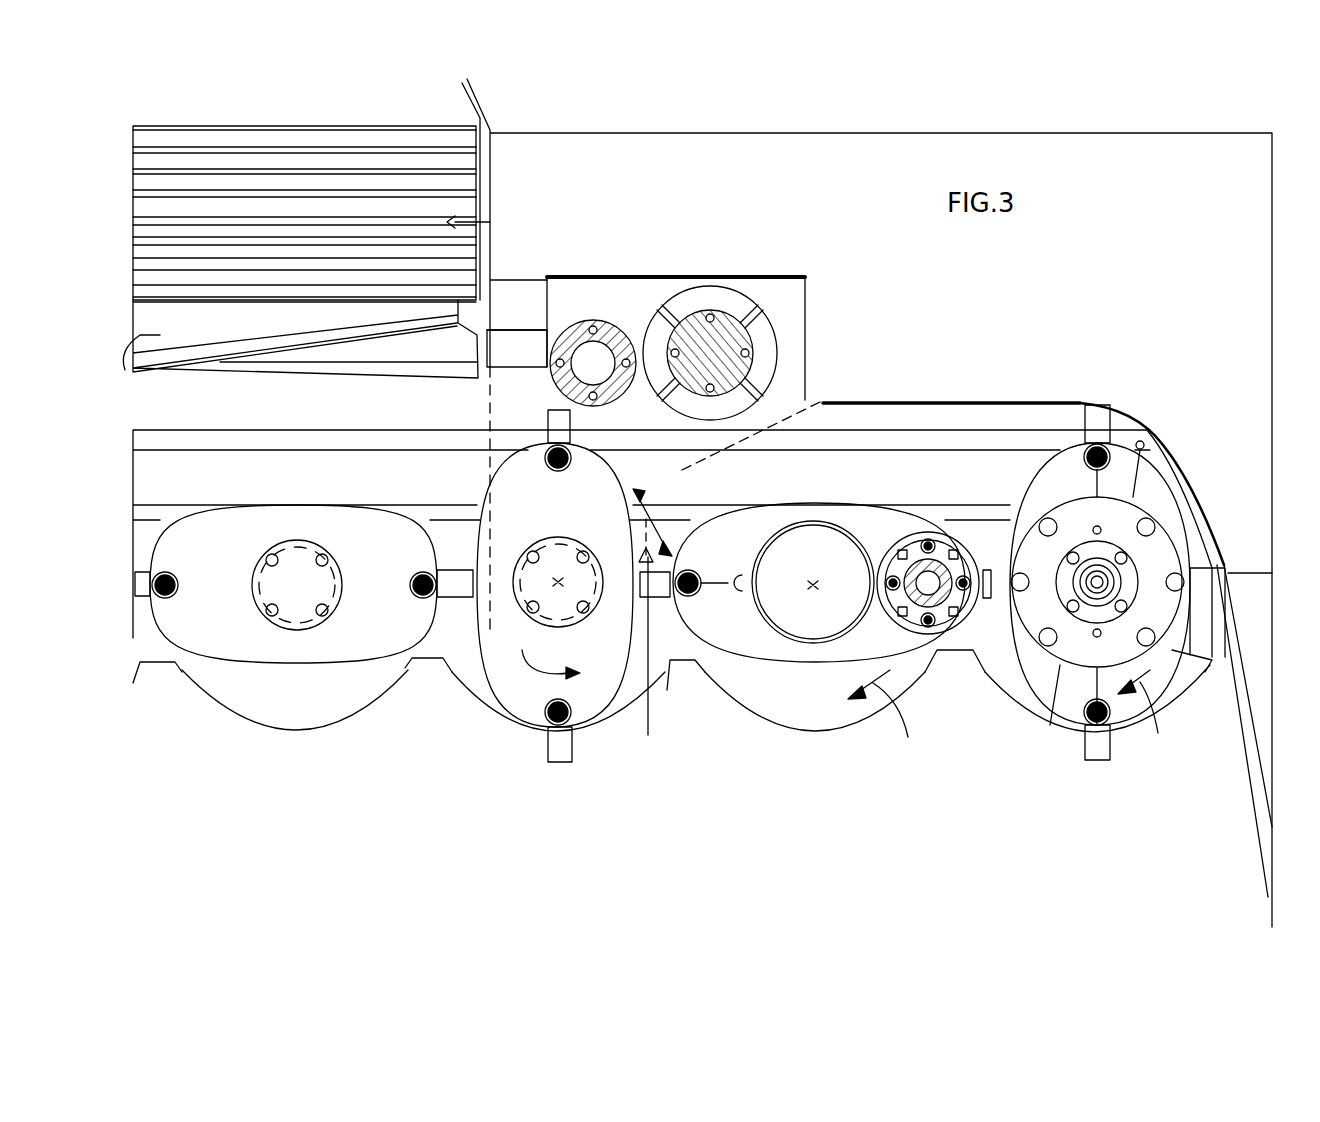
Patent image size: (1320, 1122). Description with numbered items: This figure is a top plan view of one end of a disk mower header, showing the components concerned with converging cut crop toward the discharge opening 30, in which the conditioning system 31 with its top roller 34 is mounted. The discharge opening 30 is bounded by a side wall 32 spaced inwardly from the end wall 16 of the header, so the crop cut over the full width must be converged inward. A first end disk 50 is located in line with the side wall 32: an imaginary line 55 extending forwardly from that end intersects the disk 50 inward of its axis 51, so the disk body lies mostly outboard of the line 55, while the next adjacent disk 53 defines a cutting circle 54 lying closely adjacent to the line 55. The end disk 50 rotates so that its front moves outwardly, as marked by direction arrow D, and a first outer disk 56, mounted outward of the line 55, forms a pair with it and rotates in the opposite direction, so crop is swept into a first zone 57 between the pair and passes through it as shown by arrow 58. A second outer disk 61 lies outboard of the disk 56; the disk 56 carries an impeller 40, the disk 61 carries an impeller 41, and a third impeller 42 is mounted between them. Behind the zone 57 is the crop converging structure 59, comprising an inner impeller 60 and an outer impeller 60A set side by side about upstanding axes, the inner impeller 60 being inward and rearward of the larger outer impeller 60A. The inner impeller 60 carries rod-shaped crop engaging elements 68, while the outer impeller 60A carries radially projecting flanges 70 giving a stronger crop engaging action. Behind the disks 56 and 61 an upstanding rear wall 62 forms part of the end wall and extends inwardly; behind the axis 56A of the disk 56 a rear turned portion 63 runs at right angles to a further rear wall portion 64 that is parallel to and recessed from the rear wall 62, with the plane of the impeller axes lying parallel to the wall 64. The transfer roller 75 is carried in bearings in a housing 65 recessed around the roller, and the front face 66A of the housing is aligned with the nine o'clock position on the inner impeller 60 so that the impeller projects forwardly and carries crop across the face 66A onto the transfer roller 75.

The end wall 16 is at (1255, 675).
The discharge opening 30 is at (493, 222).
The conditioning system 31 is at (268, 116).
The side wall 32 is at (492, 241).
The top roller 34 is at (315, 150).
The impeller 40 is at (793, 642).
The impeller 41 is at (1022, 580).
The third impeller 42 is at (930, 545).
The first end disk 50 is at (523, 705).
The axis 51 is at (558, 580).
The adjacent disk 53 is at (310, 642).
The cutting circle 54 is at (472, 618).
The imaginary line 55 is at (490, 452).
The first outer disk 56 is at (718, 642).
The axis 56A is at (812, 585).
The first zone 57 is at (726, 479).
The arrow 58 is at (650, 642).
The crop converging structure 59 is at (652, 246).
The inner impeller 60 is at (595, 345).
The outer impeller 60A is at (735, 318).
The second outer disk 61 is at (1072, 703).
The rear wall 62 is at (1056, 402).
The rear turned portion 63 is at (808, 320).
The further rear wall portion 64 is at (711, 278).
The housing 65 is at (516, 300).
The front face 66A is at (512, 368).
The crop engaging elements 68 is at (592, 398).
The flanges 70 is at (652, 327).
The transfer roller 75 is at (125, 370).